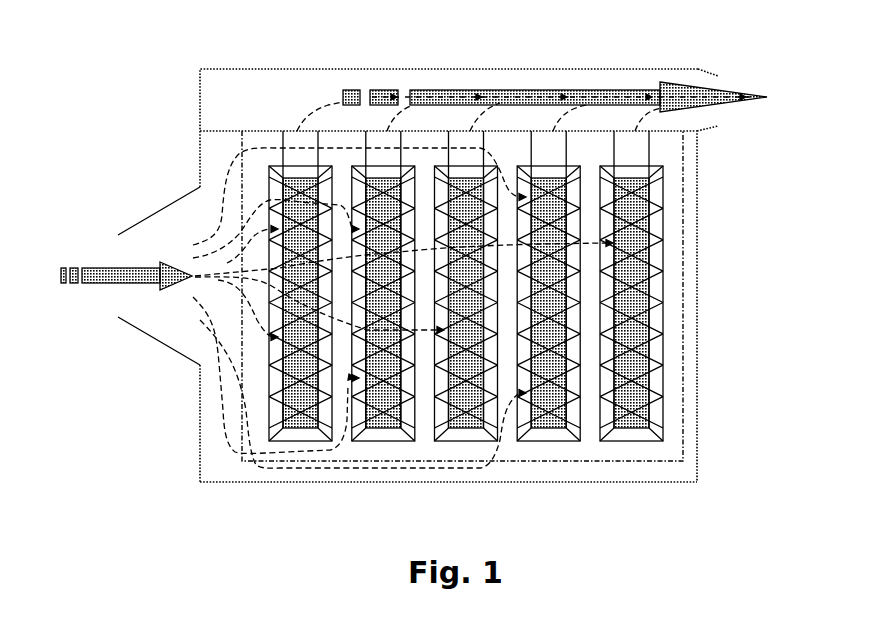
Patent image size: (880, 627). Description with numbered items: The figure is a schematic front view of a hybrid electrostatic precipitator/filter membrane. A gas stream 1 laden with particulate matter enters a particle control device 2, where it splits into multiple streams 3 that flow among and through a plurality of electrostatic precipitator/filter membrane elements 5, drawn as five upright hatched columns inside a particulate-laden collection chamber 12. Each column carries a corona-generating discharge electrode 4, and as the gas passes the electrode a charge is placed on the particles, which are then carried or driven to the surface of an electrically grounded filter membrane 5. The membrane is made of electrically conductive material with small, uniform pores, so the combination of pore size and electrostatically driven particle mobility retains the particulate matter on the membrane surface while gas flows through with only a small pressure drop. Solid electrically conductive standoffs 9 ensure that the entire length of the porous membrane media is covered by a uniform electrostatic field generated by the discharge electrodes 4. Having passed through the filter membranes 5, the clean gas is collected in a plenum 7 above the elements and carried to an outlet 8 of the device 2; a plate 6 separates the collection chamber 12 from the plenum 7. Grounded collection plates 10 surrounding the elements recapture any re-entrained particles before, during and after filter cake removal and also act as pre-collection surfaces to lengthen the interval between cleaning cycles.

The gas stream 1 is at (126, 267).
The particle control device 2 is at (198, 447).
The multiple streams 3 is at (218, 292).
The corona-generating discharge electrode 4 is at (667, 291).
The filter membrane 5 is at (650, 227).
The plate 6 is at (219, 130).
The plenum 7 is at (263, 95).
The outlet 8 is at (555, 90).
The standoffs 9 is at (274, 147).
The grounded collection plates 10 is at (686, 423).
The collection chamber 12 is at (672, 481).